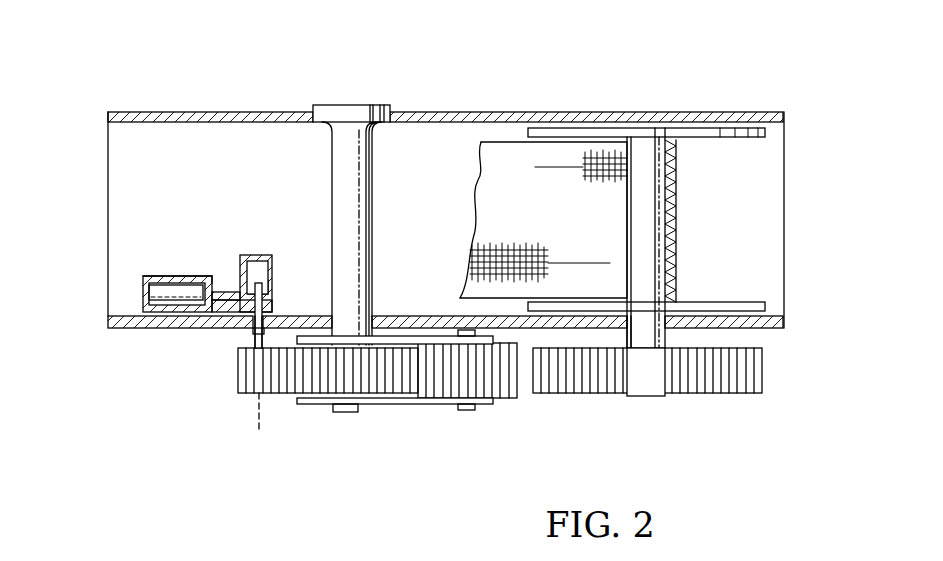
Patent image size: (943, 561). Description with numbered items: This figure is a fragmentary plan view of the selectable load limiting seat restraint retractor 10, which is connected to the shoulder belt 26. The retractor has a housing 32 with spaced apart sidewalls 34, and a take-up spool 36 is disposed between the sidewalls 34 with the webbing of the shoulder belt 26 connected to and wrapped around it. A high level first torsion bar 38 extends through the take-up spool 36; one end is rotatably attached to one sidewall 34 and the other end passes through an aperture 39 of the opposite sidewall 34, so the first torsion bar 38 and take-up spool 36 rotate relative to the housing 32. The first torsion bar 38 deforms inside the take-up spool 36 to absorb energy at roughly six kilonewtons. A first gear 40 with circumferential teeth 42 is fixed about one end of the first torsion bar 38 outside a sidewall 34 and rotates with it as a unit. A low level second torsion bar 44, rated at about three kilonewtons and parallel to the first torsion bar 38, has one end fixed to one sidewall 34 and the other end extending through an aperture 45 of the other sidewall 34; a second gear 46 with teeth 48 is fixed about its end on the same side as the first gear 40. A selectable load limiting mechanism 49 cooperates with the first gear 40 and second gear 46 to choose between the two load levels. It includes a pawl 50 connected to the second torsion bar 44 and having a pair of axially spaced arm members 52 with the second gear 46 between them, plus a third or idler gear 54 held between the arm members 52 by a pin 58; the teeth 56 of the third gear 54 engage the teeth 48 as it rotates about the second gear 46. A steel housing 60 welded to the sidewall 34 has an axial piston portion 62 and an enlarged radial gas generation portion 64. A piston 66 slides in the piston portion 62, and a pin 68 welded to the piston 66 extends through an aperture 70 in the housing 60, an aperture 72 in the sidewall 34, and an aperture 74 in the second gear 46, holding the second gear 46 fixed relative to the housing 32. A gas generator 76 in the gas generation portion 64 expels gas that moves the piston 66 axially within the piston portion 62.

The selectable load limiting seat restraint retractor 10 is at (100, 90).
The shoulder belt 26 is at (505, 162).
The housing 32 is at (790, 113).
The sidewalls 34 is at (738, 115).
The take-up spool 36 is at (693, 133).
The first torsion bar 38 is at (632, 130).
The aperture 39 is at (628, 322).
The first gear 40 is at (737, 393).
The teeth 42 is at (698, 367).
The second torsion bar 44 is at (353, 173).
The aperture 45 is at (330, 322).
The second gear 46 is at (288, 393).
The teeth 48 is at (330, 368).
The selectable load limiting mechanism 49 is at (424, 412).
The pawl 50 is at (410, 403).
The arm members 52 is at (393, 402).
The third gear 54 is at (505, 400).
The teeth 56 is at (470, 368).
The pin 58 is at (467, 410).
The housing 60 is at (148, 278).
The piston portion 62 is at (268, 257).
The gas generation portion 64 is at (170, 322).
The piston 66 is at (253, 285).
The pin 68 is at (256, 328).
The aperture 70 is at (262, 296).
The aperture 72 is at (251, 332).
The aperture 74 is at (257, 421).
The gas generator 76 is at (158, 292).